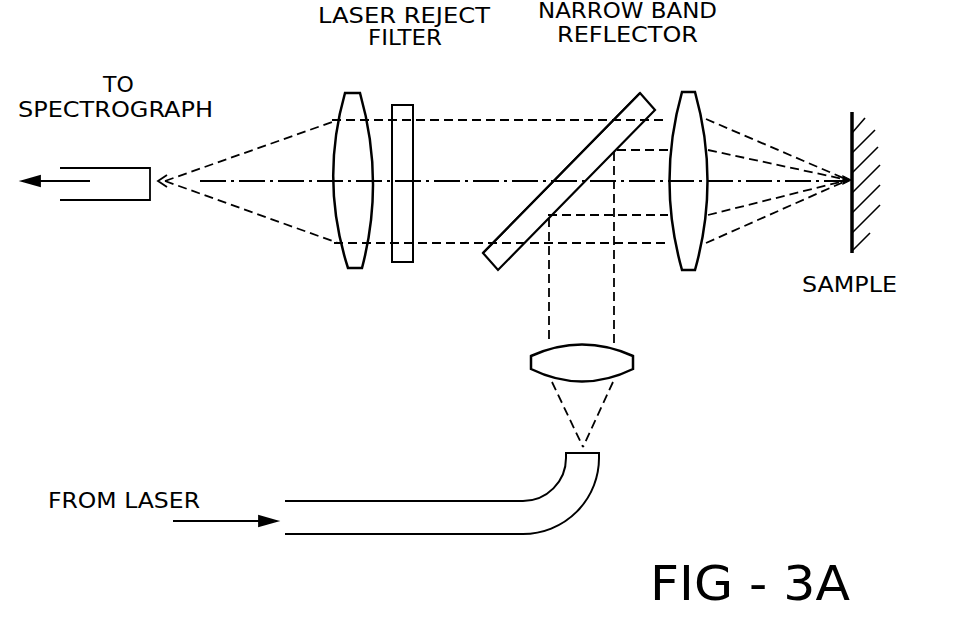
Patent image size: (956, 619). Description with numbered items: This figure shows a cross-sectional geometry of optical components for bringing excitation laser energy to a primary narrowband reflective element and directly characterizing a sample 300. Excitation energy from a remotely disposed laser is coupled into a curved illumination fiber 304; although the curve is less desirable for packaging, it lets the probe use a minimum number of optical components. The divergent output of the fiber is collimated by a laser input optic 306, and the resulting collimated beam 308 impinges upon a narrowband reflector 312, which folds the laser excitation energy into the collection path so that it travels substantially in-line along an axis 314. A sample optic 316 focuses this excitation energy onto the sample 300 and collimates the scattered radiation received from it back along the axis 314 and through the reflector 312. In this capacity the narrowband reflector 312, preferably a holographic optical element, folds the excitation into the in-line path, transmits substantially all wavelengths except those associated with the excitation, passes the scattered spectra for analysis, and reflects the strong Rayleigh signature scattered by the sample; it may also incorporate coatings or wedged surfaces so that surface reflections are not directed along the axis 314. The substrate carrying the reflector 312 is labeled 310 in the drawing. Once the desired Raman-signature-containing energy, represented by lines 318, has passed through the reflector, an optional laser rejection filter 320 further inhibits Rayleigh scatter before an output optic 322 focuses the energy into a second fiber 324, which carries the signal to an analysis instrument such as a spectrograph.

The sample 300 is at (852, 132).
The illumination fiber 304 is at (427, 522).
The laser input optic 306 is at (623, 375).
The collimated beam 308 is at (577, 322).
The beam splitter substrate 310 is at (507, 261).
The narrowband reflector 312 is at (628, 105).
The axis 314 is at (290, 181).
The sample optic 316 is at (700, 253).
The lines 318 is at (433, 121).
The laser rejection filter 320 is at (403, 262).
The output optic 322 is at (355, 252).
The second fiber 324 is at (111, 200).